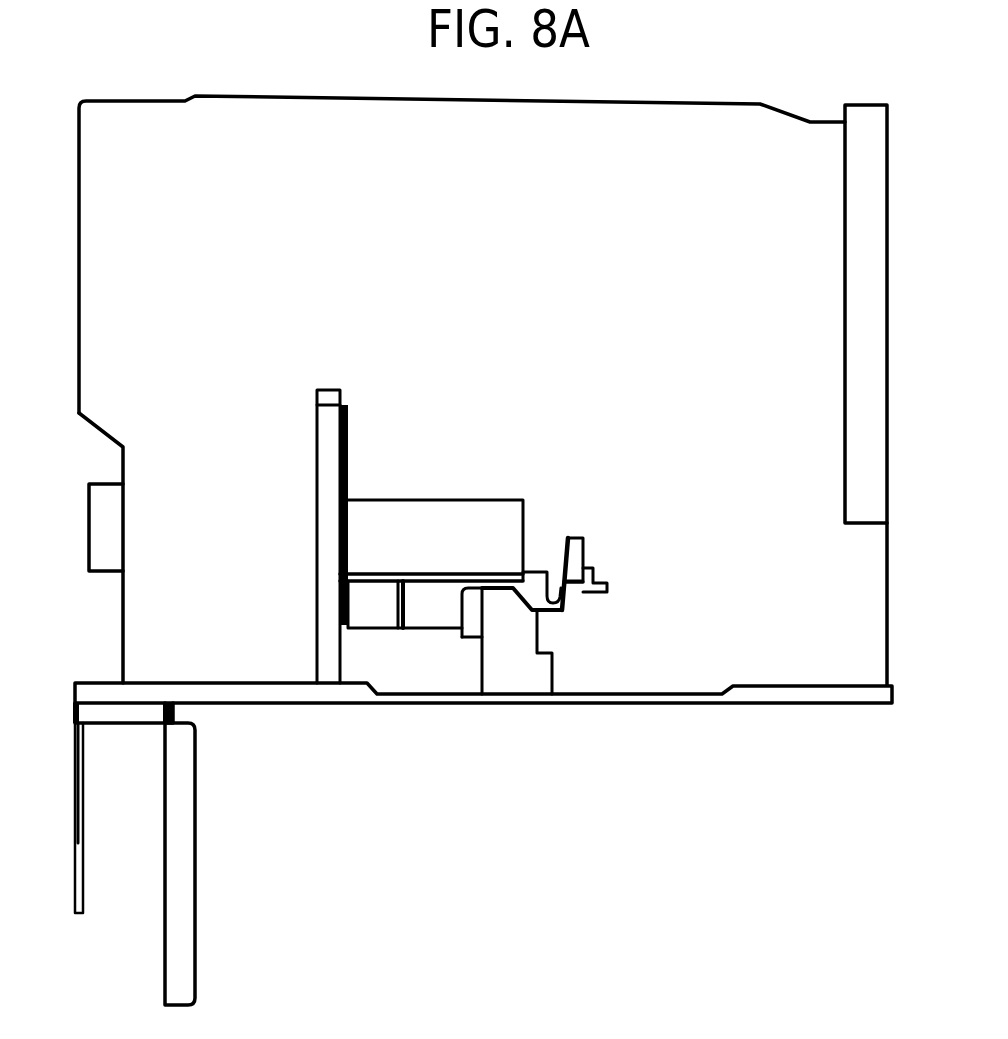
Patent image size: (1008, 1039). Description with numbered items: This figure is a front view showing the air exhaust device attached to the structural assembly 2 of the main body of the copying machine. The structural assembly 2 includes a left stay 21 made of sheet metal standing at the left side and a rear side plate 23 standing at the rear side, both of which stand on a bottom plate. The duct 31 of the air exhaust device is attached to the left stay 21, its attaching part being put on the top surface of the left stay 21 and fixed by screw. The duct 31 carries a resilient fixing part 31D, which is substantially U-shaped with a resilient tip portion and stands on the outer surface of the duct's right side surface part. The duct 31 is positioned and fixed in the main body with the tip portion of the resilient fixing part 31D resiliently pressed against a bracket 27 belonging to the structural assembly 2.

The structural assembly 2 is at (736, 764).
The rear side plate 23 is at (647, 132).
The left stay 21 is at (325, 473).
The duct 31 is at (421, 553).
The resilient fixing part 31D is at (536, 601).
The bracket 27 is at (578, 544).